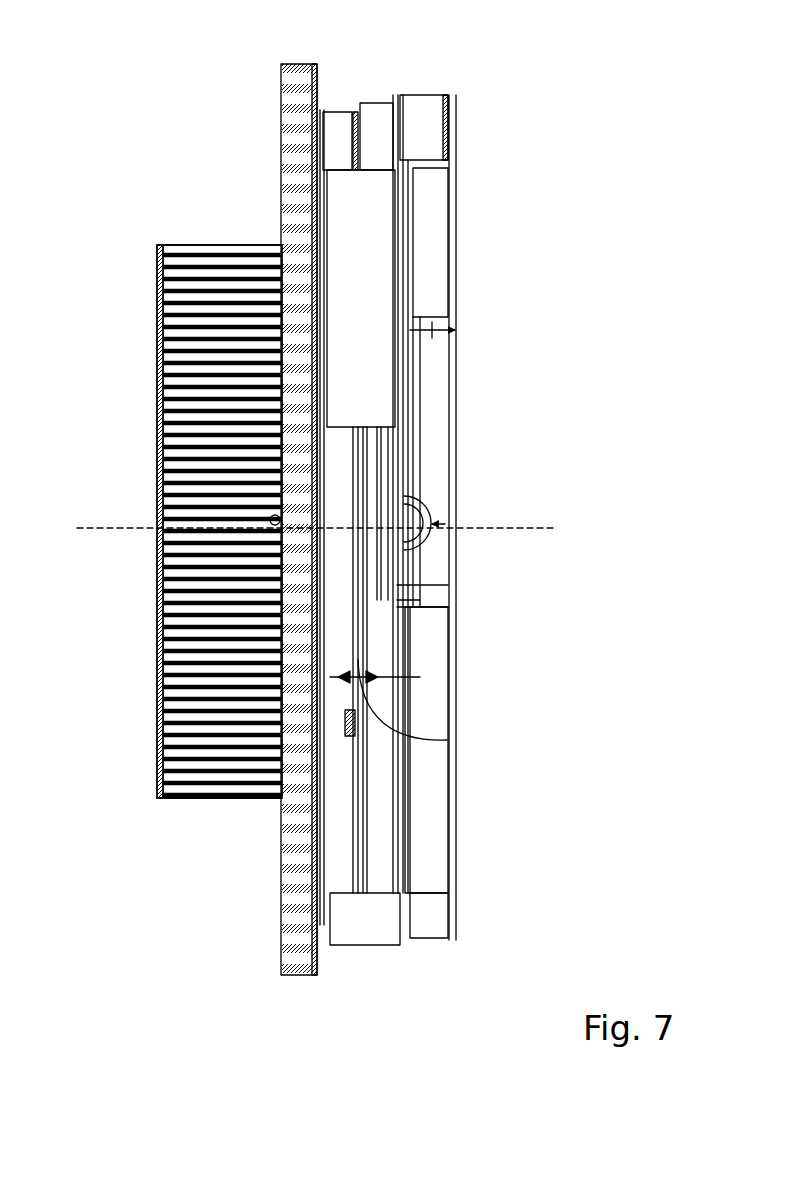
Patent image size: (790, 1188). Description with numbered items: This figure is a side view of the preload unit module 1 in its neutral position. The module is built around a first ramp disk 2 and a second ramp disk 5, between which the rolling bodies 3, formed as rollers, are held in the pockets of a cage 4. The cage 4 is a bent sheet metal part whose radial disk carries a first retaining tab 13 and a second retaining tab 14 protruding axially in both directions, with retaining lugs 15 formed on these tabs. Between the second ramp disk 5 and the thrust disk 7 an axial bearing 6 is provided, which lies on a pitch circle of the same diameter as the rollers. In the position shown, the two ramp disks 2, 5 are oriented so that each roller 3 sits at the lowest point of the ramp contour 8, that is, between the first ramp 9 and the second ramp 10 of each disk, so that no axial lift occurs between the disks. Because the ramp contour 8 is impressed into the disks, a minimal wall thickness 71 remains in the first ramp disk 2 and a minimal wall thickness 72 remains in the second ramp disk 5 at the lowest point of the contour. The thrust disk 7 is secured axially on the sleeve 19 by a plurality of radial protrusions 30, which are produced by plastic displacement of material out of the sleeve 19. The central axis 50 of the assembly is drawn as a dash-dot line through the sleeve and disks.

The preload unit module 1 is at (268, 162).
The first ramp disk 2 is at (455, 390).
The rolling bodies 3 is at (412, 507).
The cage 4 is at (428, 585).
The second ramp disk 5 is at (383, 110).
The axial bearing 6 is at (337, 130).
The thrust disk 7 is at (281, 99).
The ramp contour 8 is at (448, 525).
The first ramp 9 is at (430, 448).
The second ramp 10 is at (427, 592).
The first retaining tab 13 is at (373, 238).
The second retaining tab 14 is at (428, 112).
The retaining lugs 15 is at (455, 880).
The sleeve 19 is at (160, 330).
The radial protrusions 30 is at (268, 245).
The axis of rotation 50 is at (153, 510).
The minimal wall thickness 71 is at (452, 320).
The minimal wall thickness 72 is at (455, 741).